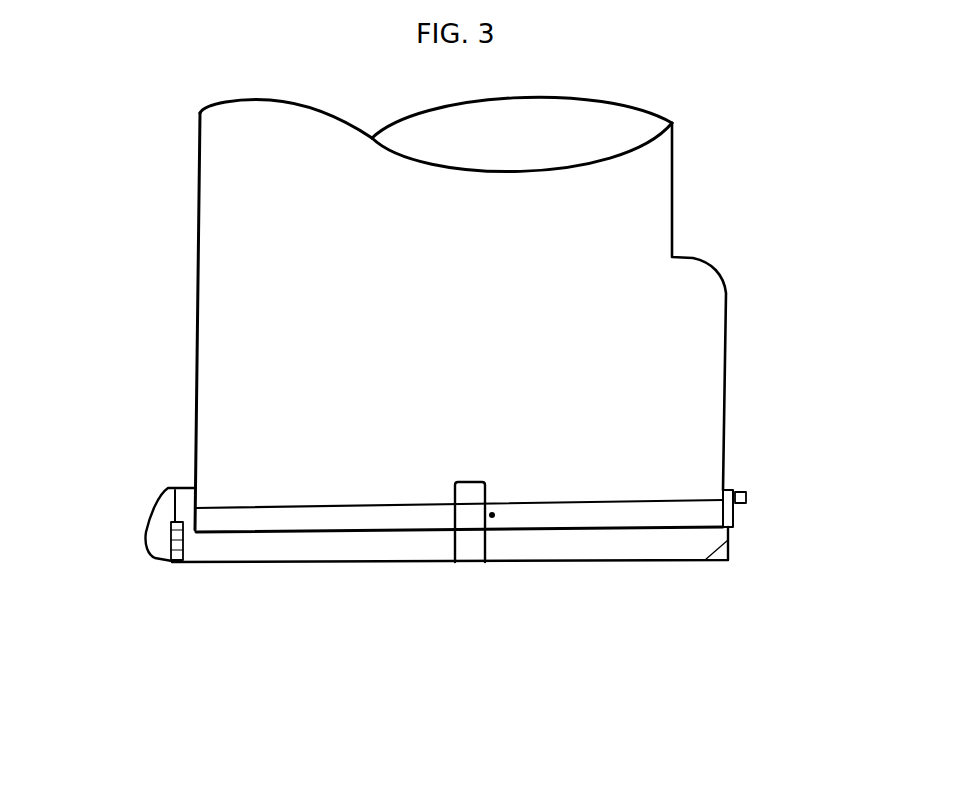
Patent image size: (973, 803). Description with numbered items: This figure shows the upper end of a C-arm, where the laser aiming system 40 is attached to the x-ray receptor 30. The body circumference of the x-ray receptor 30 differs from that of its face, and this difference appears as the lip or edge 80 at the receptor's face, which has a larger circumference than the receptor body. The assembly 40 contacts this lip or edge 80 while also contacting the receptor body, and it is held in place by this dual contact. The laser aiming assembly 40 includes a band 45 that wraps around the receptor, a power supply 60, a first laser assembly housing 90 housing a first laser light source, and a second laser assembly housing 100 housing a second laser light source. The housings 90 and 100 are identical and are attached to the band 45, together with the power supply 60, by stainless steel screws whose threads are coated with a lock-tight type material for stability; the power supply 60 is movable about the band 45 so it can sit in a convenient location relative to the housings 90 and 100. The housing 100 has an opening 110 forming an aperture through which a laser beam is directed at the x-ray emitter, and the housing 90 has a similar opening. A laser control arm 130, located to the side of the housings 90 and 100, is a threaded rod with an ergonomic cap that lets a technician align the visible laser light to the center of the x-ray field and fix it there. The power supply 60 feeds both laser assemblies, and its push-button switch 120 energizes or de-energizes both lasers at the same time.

The x-ray receptor 30 is at (713, 385).
The laser aiming system 40 is at (370, 585).
The band 45 is at (683, 505).
The power supply 60 is at (737, 517).
The lip or edge 80 is at (722, 540).
The first laser assembly housing 90 is at (473, 557).
The second laser assembly housing 100 is at (150, 553).
The opening 110 is at (175, 567).
The switch 120 is at (747, 497).
The laser control arm 130 is at (497, 514).